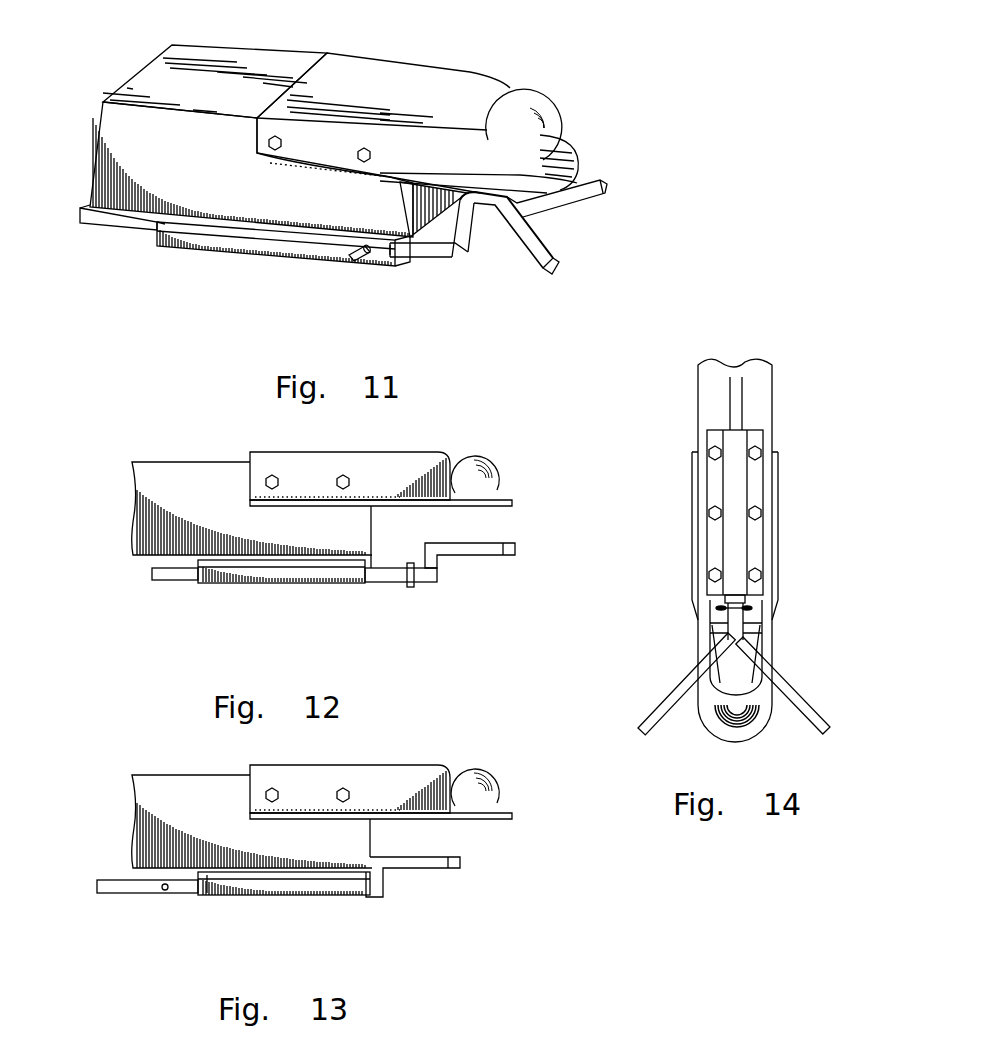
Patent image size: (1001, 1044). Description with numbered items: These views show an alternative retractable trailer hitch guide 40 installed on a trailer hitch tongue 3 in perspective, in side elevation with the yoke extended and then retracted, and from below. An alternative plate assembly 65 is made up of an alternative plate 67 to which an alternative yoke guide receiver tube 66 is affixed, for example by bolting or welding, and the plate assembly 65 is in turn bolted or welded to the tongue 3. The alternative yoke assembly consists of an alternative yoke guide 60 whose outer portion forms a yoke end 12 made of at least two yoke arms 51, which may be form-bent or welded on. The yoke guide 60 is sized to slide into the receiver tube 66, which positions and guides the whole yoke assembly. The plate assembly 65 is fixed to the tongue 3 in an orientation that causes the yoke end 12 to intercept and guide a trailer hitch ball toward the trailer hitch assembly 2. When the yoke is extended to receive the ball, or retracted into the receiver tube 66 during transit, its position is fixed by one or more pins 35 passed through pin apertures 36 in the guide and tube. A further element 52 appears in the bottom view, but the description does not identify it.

In FIG. 11, the trailer hitch assembly 2 is at (553, 55).
In FIG. 12, the trailer hitch assembly 2 is at (505, 430).
In FIG. 13, the trailer hitch assembly 2 is at (510, 740).
In FIG. 14, the trailer hitch assembly 2 is at (805, 615).
In FIG. 11, the trailer hitch tongue 3 is at (160, 82).
In FIG. 12, the trailer hitch tongue 3 is at (145, 488).
In FIG. 13, the trailer hitch tongue 3 is at (145, 792).
In FIG. 14, the trailer hitch tongue 3 is at (762, 378).
In FIG. 11, the yoke end 12 is at (533, 230).
In FIG. 14, the yoke end 12 is at (745, 691).
In FIG. 11, the pin 35 is at (362, 262).
In FIG. 12, the pin 35 is at (415, 585).
In FIG. 14, the pin 35 is at (750, 607).
In FIG. 11, the pin aperture 36 is at (390, 265).
In FIG. 13, the pin aperture 36 is at (160, 887).
In FIG. 11, the alternative retractable trailer hitch guide 40 is at (250, 298).
In FIG. 12, the alternative retractable trailer hitch guide 40 is at (323, 627).
In FIG. 13, the alternative retractable trailer hitch guide 40 is at (303, 911).
In FIG. 14, the alternative retractable trailer hitch guide 40 is at (730, 406).
In FIG. 11, the yoke arm 51 is at (603, 182).
In FIG. 12, the yoke arm 51 is at (473, 557).
In FIG. 13, the yoke arm 51 is at (437, 868).
In FIG. 14, the yoke arm 51 is at (670, 700).
In FIG. 14, the spring 52 is at (720, 687).
In FIG. 11, the alternative yoke guide 60 is at (457, 249).
In FIG. 12, the alternative yoke guide 60 is at (385, 580).
In FIG. 13, the alternative yoke guide 60 is at (128, 899).
In FIG. 14, the alternative yoke guide 60 is at (733, 610).
In FIG. 11, the alternative plate assembly 65 is at (234, 297).
In FIG. 12, the alternative plate assembly 65 is at (258, 615).
In FIG. 13, the alternative plate assembly 65 is at (252, 923).
In FIG. 14, the alternative plate assembly 65 is at (690, 525).
In FIG. 11, the alternative yoke guide receiver tube 66 is at (287, 260).
In FIG. 12, the alternative yoke guide receiver tube 66 is at (350, 590).
In FIG. 13, the alternative yoke guide receiver tube 66 is at (242, 893).
In FIG. 14, the alternative yoke guide receiver tube 66 is at (737, 488).
In FIG. 11, the alternative plate 67 is at (267, 233).
In FIG. 12, the alternative plate 67 is at (232, 573).
In FIG. 13, the alternative plate 67 is at (207, 893).
In FIG. 14, the alternative plate 67 is at (715, 440).